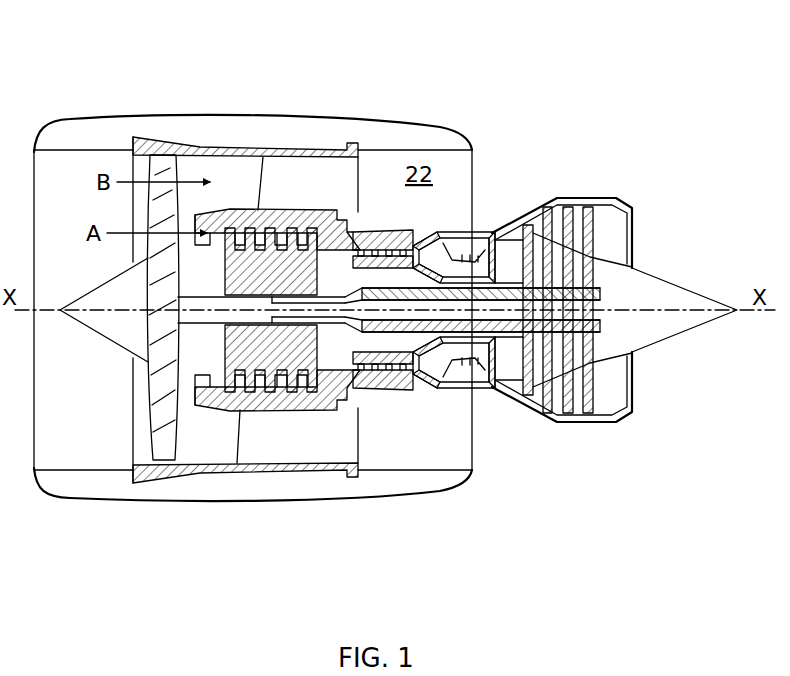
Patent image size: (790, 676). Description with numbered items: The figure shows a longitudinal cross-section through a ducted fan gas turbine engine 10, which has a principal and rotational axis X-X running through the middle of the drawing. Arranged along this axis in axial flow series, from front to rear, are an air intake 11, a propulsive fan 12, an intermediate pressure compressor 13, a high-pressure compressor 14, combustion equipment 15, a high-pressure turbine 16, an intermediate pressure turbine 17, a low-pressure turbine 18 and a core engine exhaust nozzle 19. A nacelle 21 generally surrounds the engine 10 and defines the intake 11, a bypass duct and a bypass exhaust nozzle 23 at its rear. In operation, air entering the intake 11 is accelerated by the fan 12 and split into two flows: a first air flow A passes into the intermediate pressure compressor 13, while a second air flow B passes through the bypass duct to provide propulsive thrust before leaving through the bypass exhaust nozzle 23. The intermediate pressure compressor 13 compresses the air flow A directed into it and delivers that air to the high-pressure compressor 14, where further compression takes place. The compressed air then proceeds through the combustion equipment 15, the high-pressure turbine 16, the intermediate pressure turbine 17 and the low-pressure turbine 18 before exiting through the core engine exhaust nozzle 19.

The ducted fan gas turbine engine 10 is at (80, 90).
The air intake 11 is at (276, 286).
The propulsive fan 12 is at (156, 427).
The intermediate pressure compressor 13 is at (280, 385).
The high-pressure compressor 14 is at (392, 262).
The combustion equipment 15 is at (420, 386).
The high-pressure turbine 16 is at (475, 388).
The intermediate pressure turbine 17 is at (526, 236).
The low-pressure turbine 18 is at (535, 406).
The core engine exhaust nozzle 19 is at (620, 205).
The nacelle 21 is at (290, 132).
The bypass exhaust nozzle 23 is at (472, 150).